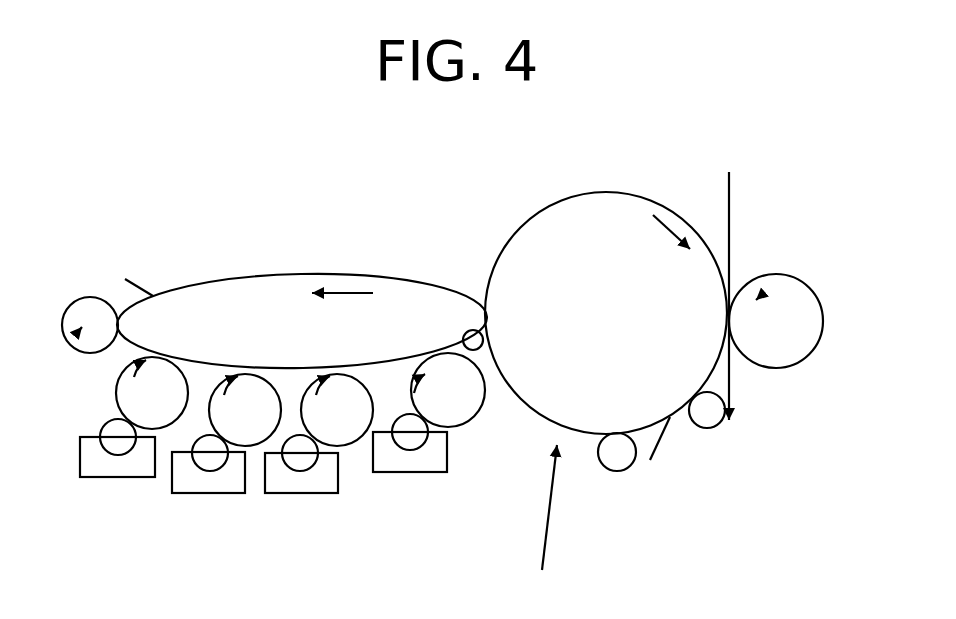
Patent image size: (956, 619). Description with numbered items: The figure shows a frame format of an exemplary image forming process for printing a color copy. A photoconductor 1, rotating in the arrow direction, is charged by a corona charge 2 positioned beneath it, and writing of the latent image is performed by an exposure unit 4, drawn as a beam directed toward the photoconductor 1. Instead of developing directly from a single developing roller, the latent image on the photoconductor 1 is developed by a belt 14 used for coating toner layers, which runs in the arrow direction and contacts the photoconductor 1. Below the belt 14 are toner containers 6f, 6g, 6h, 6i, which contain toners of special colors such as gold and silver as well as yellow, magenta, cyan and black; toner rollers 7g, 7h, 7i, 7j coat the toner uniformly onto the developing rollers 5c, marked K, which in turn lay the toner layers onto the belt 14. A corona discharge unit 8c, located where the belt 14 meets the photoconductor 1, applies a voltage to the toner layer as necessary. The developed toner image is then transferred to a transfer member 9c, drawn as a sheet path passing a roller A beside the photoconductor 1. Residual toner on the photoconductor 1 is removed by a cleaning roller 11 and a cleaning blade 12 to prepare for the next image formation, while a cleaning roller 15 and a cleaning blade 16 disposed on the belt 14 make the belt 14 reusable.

The photoconductor 1 is at (626, 193).
The corona charge 2 is at (616, 471).
The exposure unit 4 is at (548, 524).
The developing roller 5c is at (160, 429).
The toner container 6f is at (428, 472).
The toner container 6g is at (317, 493).
The toner container 6h is at (224, 493).
The toner container 6i is at (135, 477).
The toner roller 7g is at (405, 450).
The toner roller 7h is at (295, 471).
The toner roller 7i is at (205, 471).
The toner roller 7j is at (115, 455).
The corona discharge unit 8c is at (483, 349).
The transfer member 9c is at (729, 208).
The cleaning roller 11 is at (719, 422).
The cleaning blade 12 is at (660, 440).
The belt 14 is at (302, 273).
The cleaning roller 15 is at (84, 300).
The cleaning blade 16 is at (137, 286).
The fixing roller A is at (776, 321).